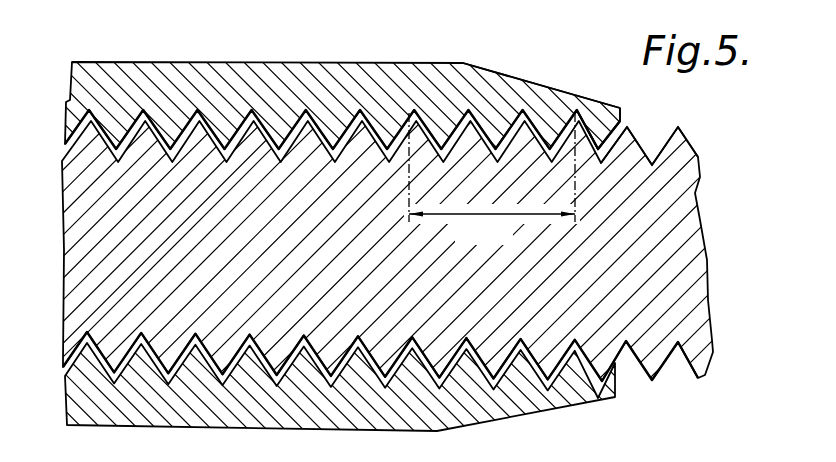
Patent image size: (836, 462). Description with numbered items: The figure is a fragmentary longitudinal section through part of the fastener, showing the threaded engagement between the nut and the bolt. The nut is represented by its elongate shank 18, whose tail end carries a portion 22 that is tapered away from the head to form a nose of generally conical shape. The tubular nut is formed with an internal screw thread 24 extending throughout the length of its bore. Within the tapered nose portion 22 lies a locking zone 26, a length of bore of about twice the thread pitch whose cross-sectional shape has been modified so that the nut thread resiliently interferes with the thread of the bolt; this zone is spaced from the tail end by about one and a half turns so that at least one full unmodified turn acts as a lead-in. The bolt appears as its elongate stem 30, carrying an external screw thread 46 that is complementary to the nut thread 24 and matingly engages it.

The shank 18 is at (332, 63).
The tapered nose portion 22 is at (530, 83).
The internal screw thread 24 is at (622, 121).
The locking zone 26 is at (509, 215).
The stem 30 is at (700, 214).
The external screw thread 46 is at (685, 132).